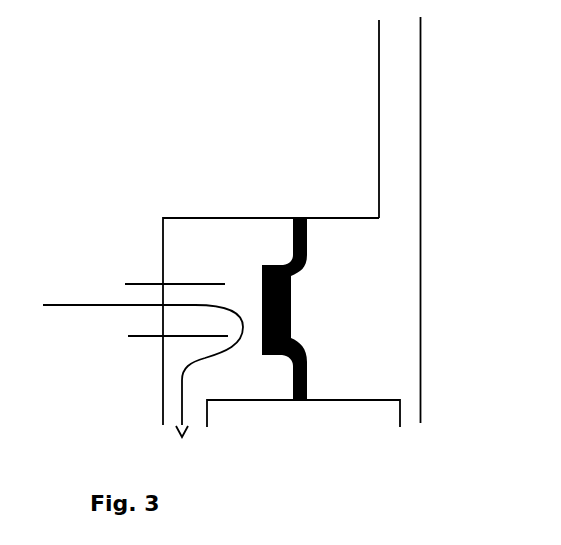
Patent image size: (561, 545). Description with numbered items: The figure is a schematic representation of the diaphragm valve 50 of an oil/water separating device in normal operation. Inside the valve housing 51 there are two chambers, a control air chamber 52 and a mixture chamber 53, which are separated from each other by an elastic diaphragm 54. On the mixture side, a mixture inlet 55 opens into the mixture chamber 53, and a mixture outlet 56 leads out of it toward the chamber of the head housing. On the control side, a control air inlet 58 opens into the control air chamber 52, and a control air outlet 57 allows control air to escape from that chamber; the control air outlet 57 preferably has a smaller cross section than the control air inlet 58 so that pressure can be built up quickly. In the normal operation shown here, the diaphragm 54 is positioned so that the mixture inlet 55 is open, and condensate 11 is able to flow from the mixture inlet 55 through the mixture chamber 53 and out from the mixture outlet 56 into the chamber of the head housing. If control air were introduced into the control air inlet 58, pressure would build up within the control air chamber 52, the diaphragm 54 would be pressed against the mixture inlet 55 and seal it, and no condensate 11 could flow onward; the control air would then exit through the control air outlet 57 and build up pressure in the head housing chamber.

The condensate 11 is at (70, 305).
The diaphragm valve 50 is at (221, 107).
The valve housing 51 is at (197, 218).
The control air chamber 52 is at (393, 269).
The mixture chamber 53 is at (250, 233).
The elastic diaphragm 54 is at (293, 322).
The mixture inlet 55 is at (138, 283).
The mixture outlet 56 is at (163, 415).
The control air outlet 57 is at (421, 412).
The control air inlet 58 is at (421, 118).